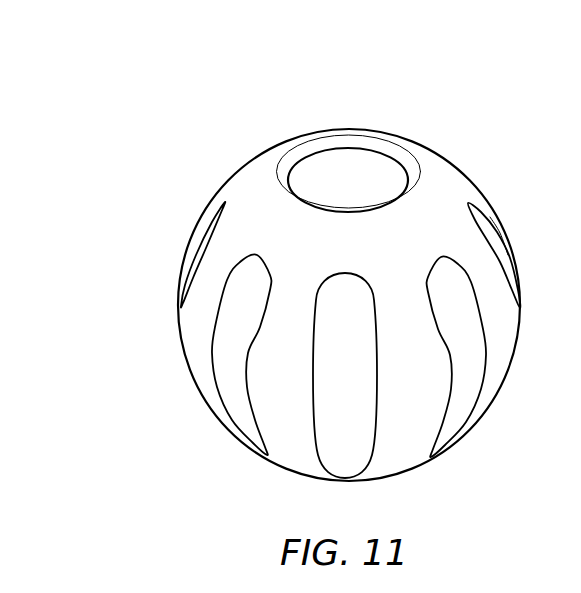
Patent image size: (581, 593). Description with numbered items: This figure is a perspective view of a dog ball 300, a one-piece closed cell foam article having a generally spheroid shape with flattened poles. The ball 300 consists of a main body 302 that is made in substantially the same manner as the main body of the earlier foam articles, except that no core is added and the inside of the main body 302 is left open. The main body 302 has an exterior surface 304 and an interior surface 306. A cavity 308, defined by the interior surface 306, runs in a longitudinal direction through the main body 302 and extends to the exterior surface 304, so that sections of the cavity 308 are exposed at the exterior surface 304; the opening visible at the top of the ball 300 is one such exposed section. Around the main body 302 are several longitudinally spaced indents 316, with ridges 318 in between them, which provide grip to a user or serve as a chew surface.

The ball 300 is at (240, 141).
The main body 302 is at (451, 194).
The exterior surface 304 is at (222, 253).
The interior surface 306 is at (386, 178).
The cavity 308 is at (347, 183).
The indents 316 is at (222, 375).
The ridges 318 is at (188, 328).